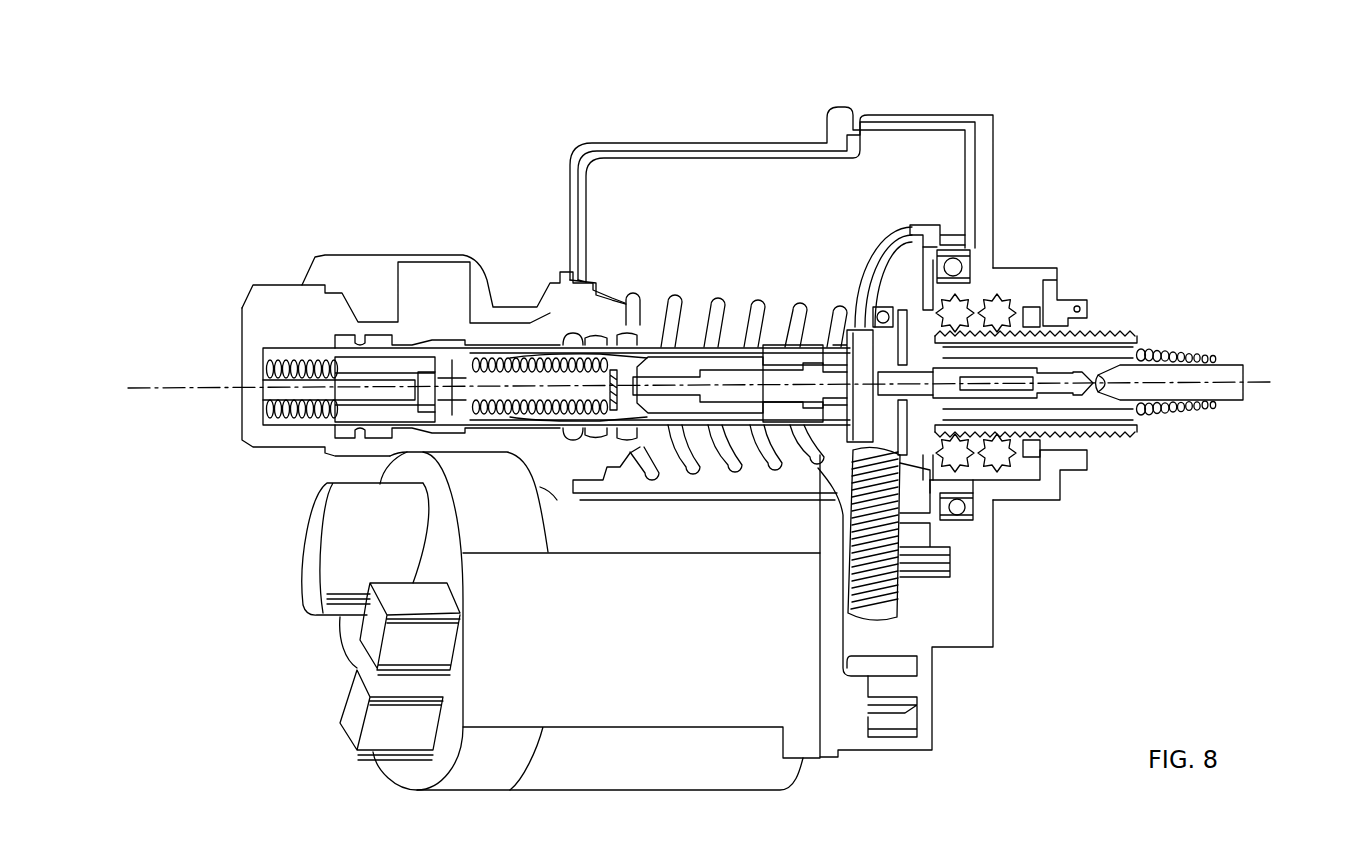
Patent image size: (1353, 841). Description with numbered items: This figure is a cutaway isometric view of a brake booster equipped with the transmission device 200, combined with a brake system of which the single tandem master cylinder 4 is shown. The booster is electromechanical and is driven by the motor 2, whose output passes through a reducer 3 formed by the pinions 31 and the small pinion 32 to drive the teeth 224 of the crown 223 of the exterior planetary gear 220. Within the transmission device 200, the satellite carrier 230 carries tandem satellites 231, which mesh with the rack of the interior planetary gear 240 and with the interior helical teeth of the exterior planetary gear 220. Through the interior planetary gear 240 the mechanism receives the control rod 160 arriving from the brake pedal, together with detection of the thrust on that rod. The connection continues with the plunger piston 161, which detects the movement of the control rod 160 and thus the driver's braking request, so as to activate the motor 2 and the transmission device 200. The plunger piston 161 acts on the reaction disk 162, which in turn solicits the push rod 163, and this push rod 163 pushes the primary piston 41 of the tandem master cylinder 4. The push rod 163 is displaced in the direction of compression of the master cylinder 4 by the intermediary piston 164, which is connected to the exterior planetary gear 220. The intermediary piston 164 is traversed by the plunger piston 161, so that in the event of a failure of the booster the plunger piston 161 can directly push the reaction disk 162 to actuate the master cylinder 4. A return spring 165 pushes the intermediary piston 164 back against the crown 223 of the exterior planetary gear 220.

The motor 2 is at (641, 643).
The worm gear transmission 3 is at (1073, 565).
The tandem master cylinder 4 is at (507, 280).
The pinions 31 is at (900, 603).
The small pinion 32 is at (930, 553).
The primary piston 41 is at (572, 340).
The control rod 160 is at (1245, 372).
The plunger piston 161 is at (1078, 395).
The reaction disk 162 is at (835, 343).
The push rod 163 is at (708, 367).
The intermediary piston 164 is at (905, 340).
The return spring 165 is at (622, 335).
The transmission device 200 is at (1083, 92).
The exterior planetary gear 220 is at (1000, 290).
The crown 223 is at (963, 250).
The teeth 224 is at (955, 235).
The satellite carrier 230 is at (990, 318).
The tandem satellites 231 is at (997, 383).
The interior planetary gear 240 is at (1113, 332).